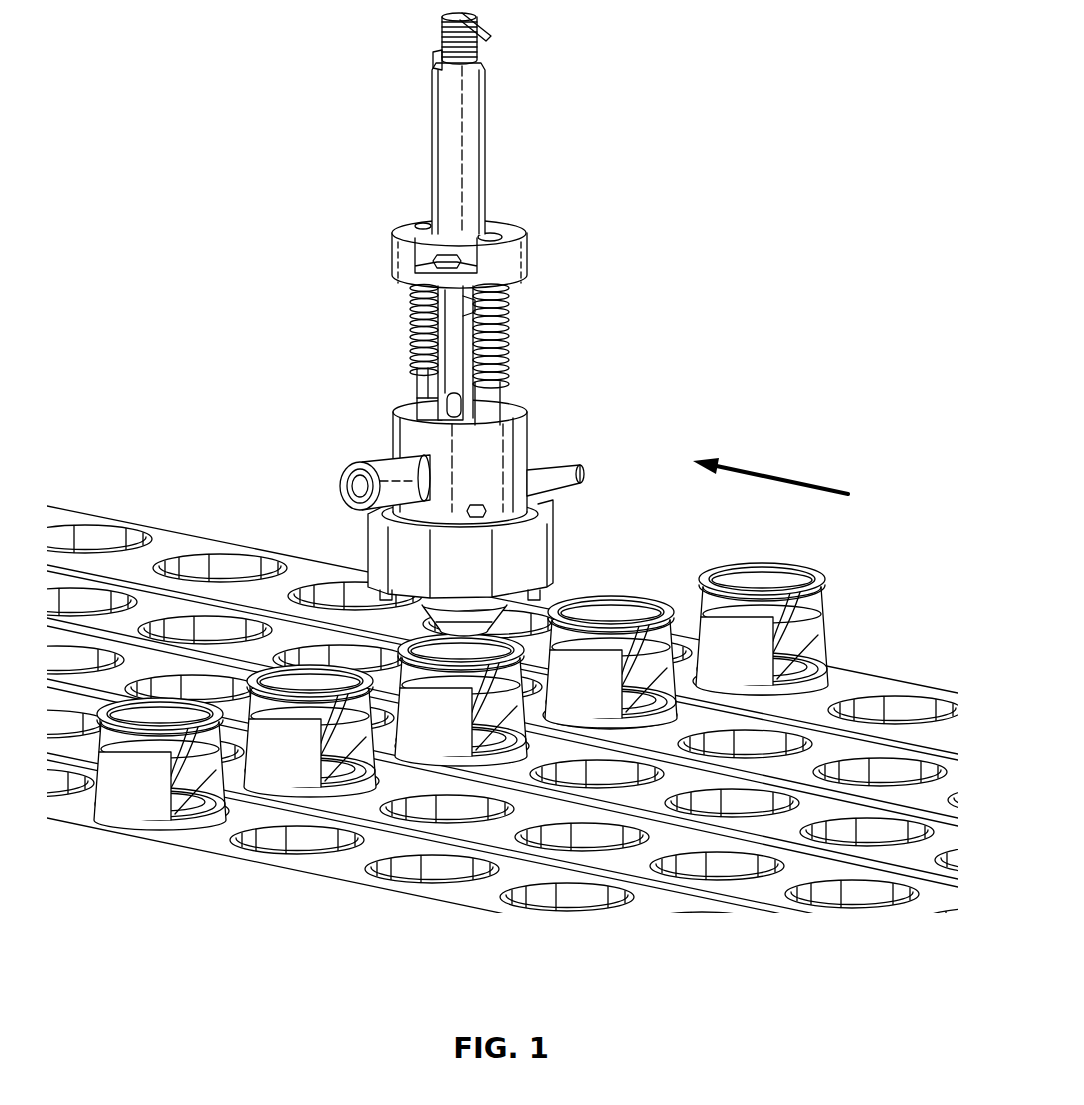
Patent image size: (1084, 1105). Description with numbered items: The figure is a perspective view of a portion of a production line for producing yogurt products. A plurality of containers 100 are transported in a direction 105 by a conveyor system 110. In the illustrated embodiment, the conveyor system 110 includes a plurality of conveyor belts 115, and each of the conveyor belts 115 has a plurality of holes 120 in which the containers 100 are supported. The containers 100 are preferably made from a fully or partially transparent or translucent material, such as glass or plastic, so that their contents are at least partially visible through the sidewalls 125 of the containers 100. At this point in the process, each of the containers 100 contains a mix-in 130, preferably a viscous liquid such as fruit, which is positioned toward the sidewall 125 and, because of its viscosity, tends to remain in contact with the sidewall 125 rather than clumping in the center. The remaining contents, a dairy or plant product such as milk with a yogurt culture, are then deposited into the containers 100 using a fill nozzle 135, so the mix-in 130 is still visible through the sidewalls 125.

The container 100 is at (143, 795).
The direction 105 is at (790, 482).
The conveyor system 110 is at (172, 527).
The conveyor belt 115 is at (347, 863).
The hole 120 is at (588, 895).
The sidewall 125 is at (668, 630).
The mix-in 130 is at (540, 773).
The fill nozzle 135 is at (537, 434).